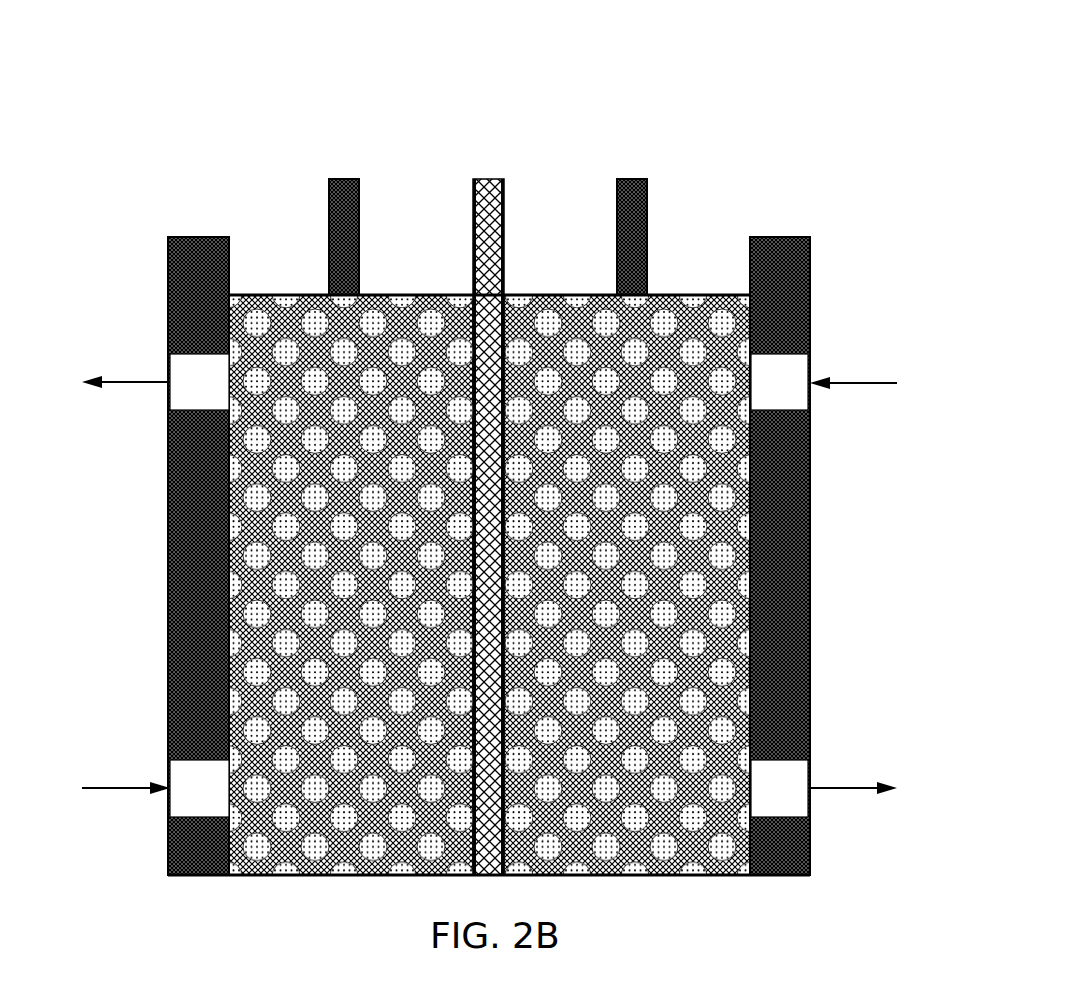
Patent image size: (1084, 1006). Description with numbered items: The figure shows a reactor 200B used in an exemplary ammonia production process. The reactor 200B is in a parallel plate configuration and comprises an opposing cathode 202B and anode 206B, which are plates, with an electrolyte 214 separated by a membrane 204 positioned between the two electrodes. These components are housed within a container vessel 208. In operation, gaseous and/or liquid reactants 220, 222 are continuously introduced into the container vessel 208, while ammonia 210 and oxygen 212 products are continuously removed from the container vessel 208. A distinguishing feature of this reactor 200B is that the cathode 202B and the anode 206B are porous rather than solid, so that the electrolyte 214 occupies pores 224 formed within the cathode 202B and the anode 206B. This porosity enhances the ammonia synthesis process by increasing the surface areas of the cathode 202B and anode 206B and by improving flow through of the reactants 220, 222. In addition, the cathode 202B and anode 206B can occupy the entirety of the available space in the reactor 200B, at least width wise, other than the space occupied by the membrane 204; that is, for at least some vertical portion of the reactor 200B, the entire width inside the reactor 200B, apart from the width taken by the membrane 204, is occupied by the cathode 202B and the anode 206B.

The reactor 200B is at (260, 72).
The cathode 202B is at (633, 179).
The membrane 204 is at (492, 179).
The anode 206B is at (342, 179).
The container vessel 208 is at (810, 610).
The ammonia 210 is at (868, 743).
The oxygen 212 is at (142, 337).
The electrolyte 214 is at (688, 815).
The gaseous and/or liquid reactant 220 is at (867, 325).
The gaseous and/or liquid reactant 222 is at (142, 730).
The pores 224 is at (258, 845).